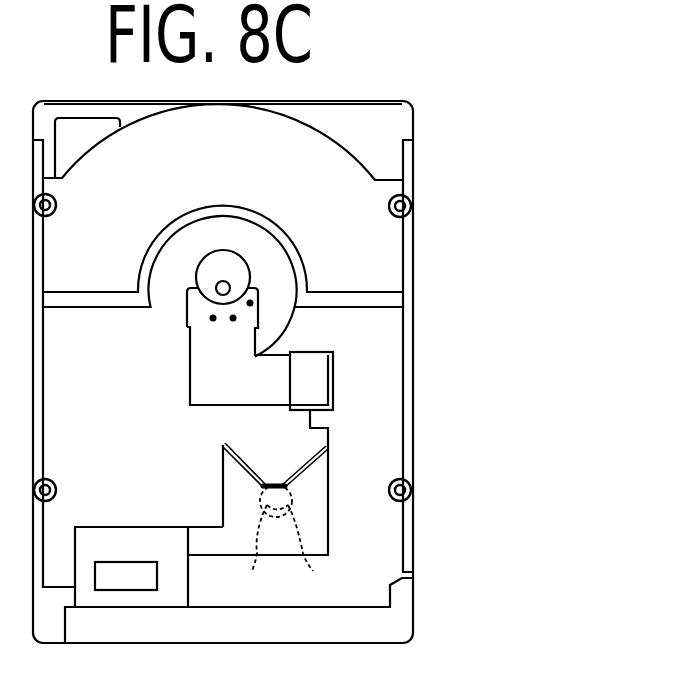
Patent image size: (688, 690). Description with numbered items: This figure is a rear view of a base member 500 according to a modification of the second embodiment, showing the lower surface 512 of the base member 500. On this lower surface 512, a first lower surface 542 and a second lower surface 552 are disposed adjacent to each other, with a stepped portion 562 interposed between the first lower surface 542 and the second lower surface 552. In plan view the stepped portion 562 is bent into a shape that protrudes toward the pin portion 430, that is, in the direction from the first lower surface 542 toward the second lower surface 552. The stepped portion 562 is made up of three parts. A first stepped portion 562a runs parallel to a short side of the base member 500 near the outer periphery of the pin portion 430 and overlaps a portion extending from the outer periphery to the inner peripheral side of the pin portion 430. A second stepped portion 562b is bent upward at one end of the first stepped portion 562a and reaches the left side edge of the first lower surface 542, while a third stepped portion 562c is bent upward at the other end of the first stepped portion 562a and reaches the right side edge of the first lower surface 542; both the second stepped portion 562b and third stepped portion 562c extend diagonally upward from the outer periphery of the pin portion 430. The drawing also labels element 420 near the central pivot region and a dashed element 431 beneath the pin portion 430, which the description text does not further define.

The base member 500 is at (378, 86).
The lower surface 512 is at (150, 379).
The pivot 420 is at (227, 284).
The first lower surface 542 is at (240, 432).
The second lower surface 552 is at (240, 508).
The stepped portion 562 is at (355, 523).
The first stepped portion 562a is at (274, 482).
The second stepped portion 562b is at (233, 462).
The third stepped portion 562c is at (310, 468).
The pin portion 430 is at (256, 540).
The pin base 431 is at (295, 550).